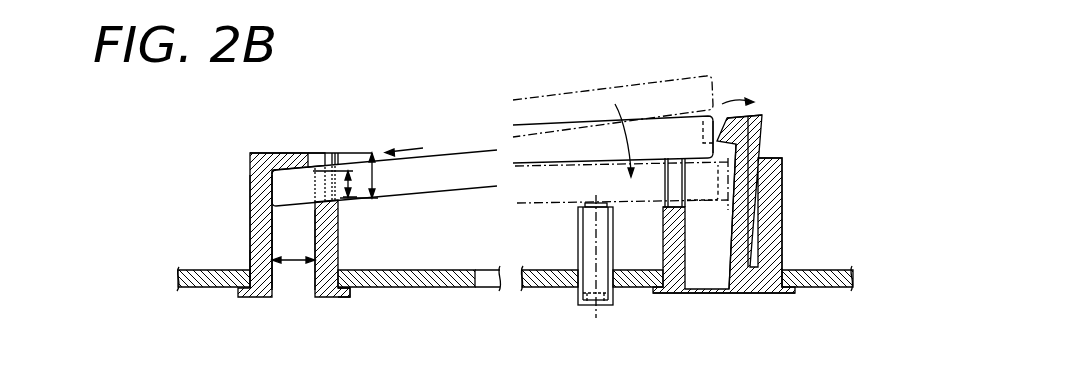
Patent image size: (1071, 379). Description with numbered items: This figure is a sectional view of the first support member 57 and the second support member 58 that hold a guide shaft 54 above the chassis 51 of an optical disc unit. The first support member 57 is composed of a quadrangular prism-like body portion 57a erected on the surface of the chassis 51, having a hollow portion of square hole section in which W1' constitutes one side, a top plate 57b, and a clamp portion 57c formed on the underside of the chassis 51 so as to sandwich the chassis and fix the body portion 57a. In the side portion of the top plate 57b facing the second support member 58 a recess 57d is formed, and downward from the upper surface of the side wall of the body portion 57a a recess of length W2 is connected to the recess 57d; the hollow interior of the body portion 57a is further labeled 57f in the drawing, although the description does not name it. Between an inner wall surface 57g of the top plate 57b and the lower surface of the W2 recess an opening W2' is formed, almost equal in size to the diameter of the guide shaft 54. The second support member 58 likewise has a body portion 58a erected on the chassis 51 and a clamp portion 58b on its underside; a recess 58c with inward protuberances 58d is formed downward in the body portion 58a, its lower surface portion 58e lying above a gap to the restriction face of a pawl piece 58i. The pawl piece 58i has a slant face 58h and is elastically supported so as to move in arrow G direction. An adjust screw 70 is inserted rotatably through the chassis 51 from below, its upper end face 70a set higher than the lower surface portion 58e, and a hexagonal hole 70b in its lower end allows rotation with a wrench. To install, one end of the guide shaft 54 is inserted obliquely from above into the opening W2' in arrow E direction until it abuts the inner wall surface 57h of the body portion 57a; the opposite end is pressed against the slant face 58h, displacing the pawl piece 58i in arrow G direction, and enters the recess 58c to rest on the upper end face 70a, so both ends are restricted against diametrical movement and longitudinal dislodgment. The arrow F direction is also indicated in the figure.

The chassis 51 is at (440, 270).
The guide shaft 54 is at (447, 162).
The first support member 57 is at (243, 192).
The body portion 57a is at (260, 223).
The top plate 57b is at (303, 151).
The clamp portion 57c is at (340, 298).
The recess 57d is at (319, 152).
The slot 57f is at (318, 204).
The inner wall surface 57g is at (282, 176).
The inner wall surface 57h is at (251, 263).
The second support member 58 is at (785, 168).
The body portion 58a is at (773, 243).
The clamp portion 58b is at (758, 292).
The recess 58c is at (664, 184).
The protuberances 58d is at (728, 218).
The lower surface portion 58e is at (686, 208).
The slant face 58h is at (712, 116).
The pawl piece 58i is at (765, 123).
The adjust screw 70 is at (573, 294).
The upper end face 70a is at (582, 201).
The hexagonal hole 70b is at (597, 307).
The side of hollow portion W1' is at (290, 300).
The length of recess W2 is at (387, 189).
The opening W2' is at (349, 214).
The arrow E direction E is at (405, 143).
The rotation direction F is at (634, 148).
The arrow G direction G is at (753, 103).